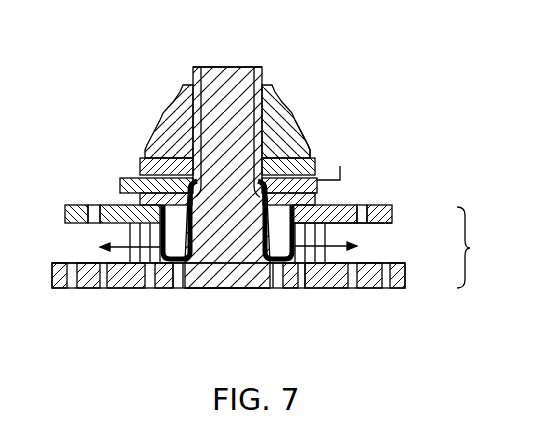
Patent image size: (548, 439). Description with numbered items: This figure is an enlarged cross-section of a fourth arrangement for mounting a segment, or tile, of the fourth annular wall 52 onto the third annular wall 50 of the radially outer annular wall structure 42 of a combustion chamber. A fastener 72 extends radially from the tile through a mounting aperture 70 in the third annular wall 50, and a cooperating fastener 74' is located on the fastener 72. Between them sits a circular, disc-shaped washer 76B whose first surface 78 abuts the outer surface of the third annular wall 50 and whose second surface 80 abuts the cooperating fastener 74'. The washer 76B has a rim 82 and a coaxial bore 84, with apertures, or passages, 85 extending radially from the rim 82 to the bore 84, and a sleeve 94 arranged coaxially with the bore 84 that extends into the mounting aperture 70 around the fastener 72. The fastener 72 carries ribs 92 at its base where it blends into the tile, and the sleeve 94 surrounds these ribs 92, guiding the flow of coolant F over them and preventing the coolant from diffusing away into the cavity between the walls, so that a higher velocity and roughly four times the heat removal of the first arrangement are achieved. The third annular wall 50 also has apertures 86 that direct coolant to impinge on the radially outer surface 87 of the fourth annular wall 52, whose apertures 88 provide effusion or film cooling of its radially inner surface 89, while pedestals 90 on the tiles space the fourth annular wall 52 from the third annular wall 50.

The radially outer annular wall structure 42 is at (471, 249).
The third annular wall 50 is at (380, 206).
The fourth annular wall 52 is at (405, 289).
The mounting aperture 70 is at (280, 289).
The fastener 72 is at (243, 66).
The cooperating fastener 74' is at (245, 111).
The washer 76B is at (316, 158).
The first surface 78 is at (317, 289).
The second surface 80 is at (300, 148).
The rim 82 is at (141, 159).
The bore 84 is at (318, 197).
The apertures, or passages 85 is at (125, 182).
The apertures 86 is at (80, 205).
The radially outer surface 87 is at (373, 256).
The apertures 88 is at (100, 289).
The radially inner surface 89 is at (198, 289).
The pedestals 90 is at (340, 232).
The ribs 92 is at (177, 289).
The sleeve 94 is at (158, 210).
The flow of coolant F is at (220, 208).